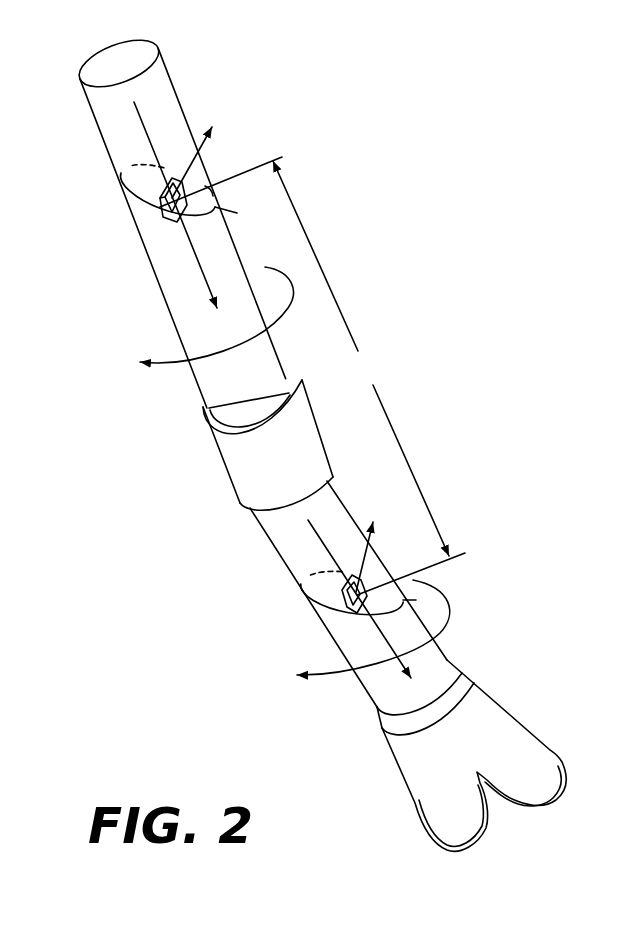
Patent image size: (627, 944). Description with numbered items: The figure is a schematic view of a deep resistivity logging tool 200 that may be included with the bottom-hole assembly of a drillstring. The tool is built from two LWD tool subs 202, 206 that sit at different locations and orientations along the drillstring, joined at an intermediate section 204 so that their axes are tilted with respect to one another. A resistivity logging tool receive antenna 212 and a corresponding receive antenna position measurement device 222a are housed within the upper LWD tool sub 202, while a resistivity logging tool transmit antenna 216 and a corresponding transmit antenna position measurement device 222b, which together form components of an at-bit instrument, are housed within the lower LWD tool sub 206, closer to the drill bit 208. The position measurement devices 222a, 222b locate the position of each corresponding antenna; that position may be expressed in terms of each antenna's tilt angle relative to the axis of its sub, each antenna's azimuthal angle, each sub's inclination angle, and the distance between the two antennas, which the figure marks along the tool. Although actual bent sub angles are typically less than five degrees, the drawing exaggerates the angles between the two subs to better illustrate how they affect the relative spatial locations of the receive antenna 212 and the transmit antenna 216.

The deep resistivity logging tool 200 is at (399, 148).
The LWD tool sub 202 is at (161, 69).
The joint collar 204 is at (212, 445).
The LWD tool sub 206 is at (343, 507).
The drill bit 208 is at (508, 712).
The receive antenna 212 is at (163, 209).
The transmit antenna 216 is at (327, 609).
The receive antenna position measurement device 222a is at (160, 212).
The transmit antenna position measurement device 222b is at (345, 596).